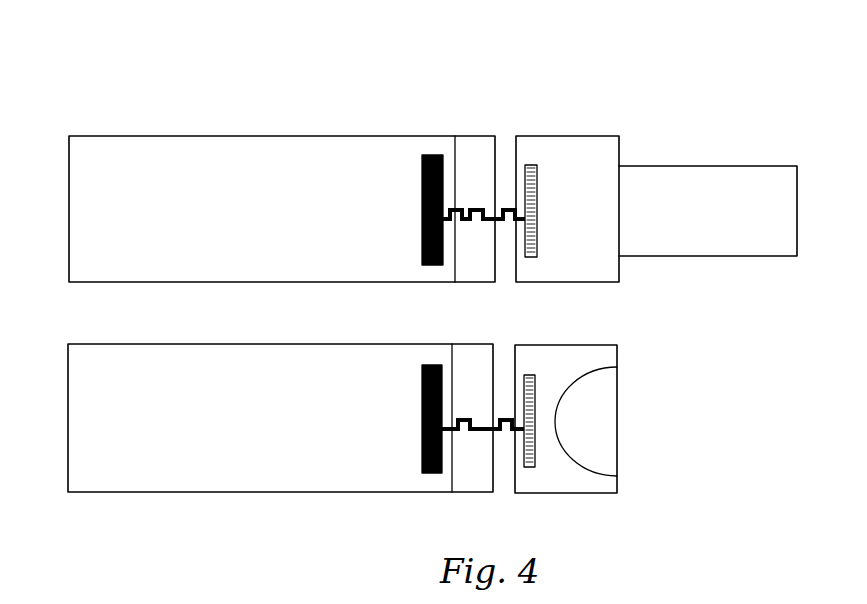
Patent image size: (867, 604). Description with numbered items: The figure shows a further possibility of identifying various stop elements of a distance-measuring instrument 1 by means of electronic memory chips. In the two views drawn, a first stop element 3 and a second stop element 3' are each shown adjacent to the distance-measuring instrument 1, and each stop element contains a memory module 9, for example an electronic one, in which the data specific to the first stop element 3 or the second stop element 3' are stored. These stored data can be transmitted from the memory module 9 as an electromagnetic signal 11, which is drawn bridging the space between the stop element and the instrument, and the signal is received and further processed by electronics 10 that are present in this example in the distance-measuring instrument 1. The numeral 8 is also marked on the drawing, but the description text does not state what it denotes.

The distance-measuring instrument 1 is at (267, 237).
The first stop element 3 is at (656, 170).
The second stop element 3' is at (623, 458).
The gap between housings 8 is at (594, 5).
The memory module 9 is at (535, 162).
The electronics 10 is at (427, 157).
The electromagnetic signal 11 is at (503, 219).